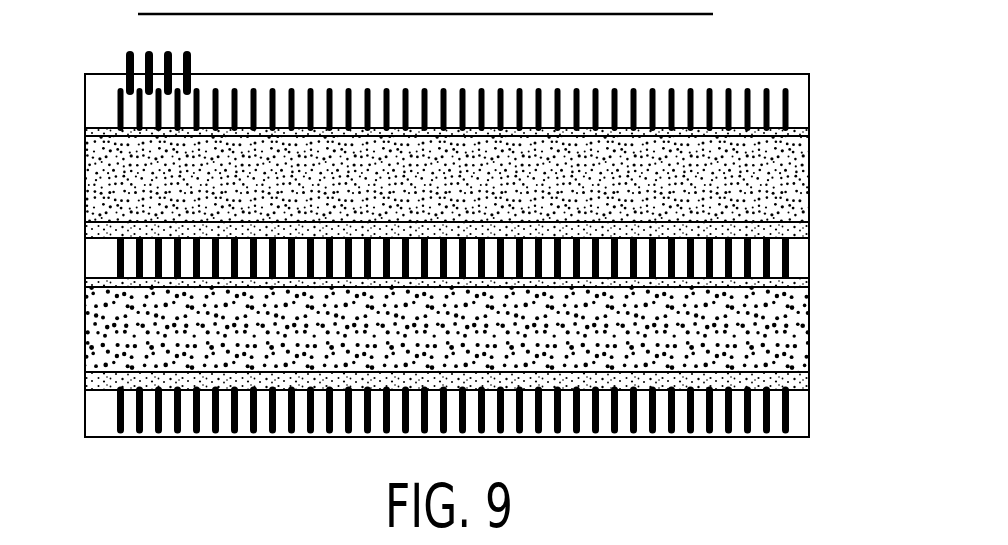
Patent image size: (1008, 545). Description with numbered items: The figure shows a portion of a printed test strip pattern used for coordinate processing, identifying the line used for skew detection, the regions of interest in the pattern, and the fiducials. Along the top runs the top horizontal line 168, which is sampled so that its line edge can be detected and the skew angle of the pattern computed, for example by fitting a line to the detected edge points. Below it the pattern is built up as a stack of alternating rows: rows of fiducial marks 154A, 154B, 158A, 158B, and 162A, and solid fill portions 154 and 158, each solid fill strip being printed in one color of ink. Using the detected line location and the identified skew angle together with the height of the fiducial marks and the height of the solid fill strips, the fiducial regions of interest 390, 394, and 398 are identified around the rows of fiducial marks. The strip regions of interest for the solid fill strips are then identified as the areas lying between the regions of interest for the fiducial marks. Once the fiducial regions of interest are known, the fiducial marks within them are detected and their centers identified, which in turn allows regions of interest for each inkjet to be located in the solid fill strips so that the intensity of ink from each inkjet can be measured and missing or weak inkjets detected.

The top horizontal line 168 is at (340, 14).
The fiducial region of interest 390 is at (781, 74).
The fiducial mark 154A is at (800, 107).
The solid fill portion 154 is at (812, 190).
The fiducial mark 154B is at (801, 253).
The fiducial mark 158A is at (801, 265).
The solid fill portion 158 is at (812, 350).
The fiducial mark 158B is at (801, 408).
The fiducial mark 162A is at (801, 418).
The fiducial region of interest 394 is at (85, 260).
The fiducial region of interest 398 is at (85, 412).